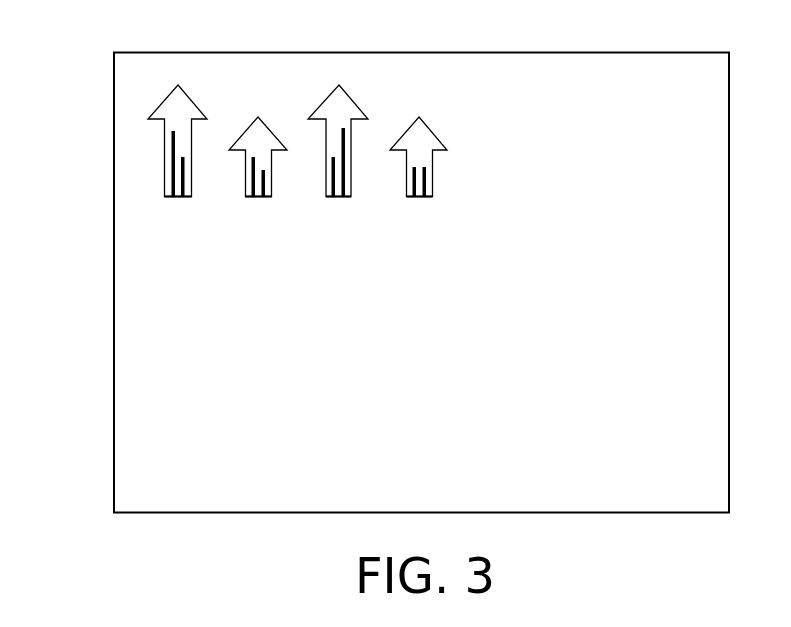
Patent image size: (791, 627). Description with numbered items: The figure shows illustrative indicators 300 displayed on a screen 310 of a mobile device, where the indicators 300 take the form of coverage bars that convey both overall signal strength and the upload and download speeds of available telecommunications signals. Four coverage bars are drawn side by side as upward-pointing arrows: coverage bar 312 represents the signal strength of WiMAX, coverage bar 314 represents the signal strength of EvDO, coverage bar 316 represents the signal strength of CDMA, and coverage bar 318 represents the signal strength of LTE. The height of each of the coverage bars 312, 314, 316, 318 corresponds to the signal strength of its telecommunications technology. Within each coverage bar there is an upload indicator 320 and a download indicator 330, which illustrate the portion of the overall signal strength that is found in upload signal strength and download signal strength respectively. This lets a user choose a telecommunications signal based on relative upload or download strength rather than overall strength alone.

The indicators 300 is at (86, 78).
The screen 310 is at (609, 52).
The coverage bar 312 is at (192, 100).
The coverage bar 314 is at (272, 130).
The coverage bar 316 is at (370, 83).
The coverage bar 318 is at (432, 130).
The upload indicator 320 is at (165, 194).
The download indicator 330 is at (192, 196).